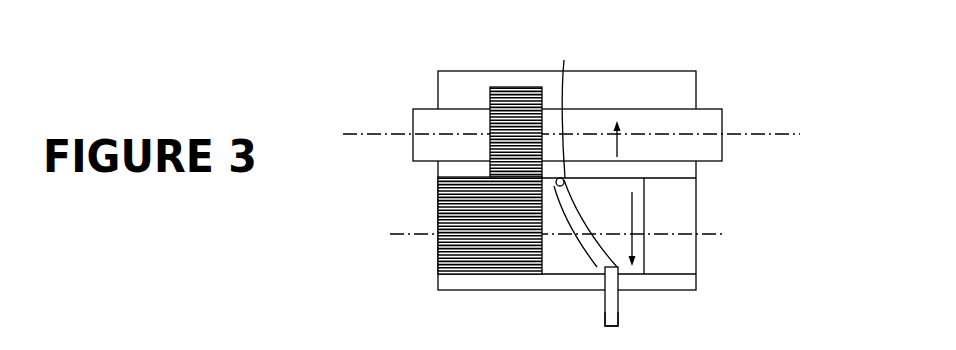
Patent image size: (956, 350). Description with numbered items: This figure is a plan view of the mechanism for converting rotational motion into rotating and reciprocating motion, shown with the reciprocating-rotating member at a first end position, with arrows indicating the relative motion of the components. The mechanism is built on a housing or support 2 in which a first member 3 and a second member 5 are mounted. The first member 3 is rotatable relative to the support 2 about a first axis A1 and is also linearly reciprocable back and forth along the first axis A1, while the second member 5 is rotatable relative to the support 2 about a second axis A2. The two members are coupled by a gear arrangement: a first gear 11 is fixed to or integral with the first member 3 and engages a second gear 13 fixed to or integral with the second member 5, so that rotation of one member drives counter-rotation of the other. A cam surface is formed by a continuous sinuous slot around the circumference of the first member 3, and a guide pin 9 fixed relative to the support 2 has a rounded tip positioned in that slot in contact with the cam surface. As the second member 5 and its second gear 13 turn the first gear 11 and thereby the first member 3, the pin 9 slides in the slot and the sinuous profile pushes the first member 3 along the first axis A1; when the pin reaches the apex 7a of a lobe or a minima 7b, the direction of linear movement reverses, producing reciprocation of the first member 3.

The housing or support 2 is at (660, 98).
The first member 3 is at (640, 263).
The second member 5 is at (723, 118).
The apex of a lobe of the cam surface 7a is at (564, 60).
The minima of the cam surface 7b is at (597, 267).
The pin 9 is at (610, 312).
The first gear 11 is at (438, 252).
The second gear 13 is at (512, 103).
The first axis A1 is at (572, 235).
The second axis A2 is at (586, 137).